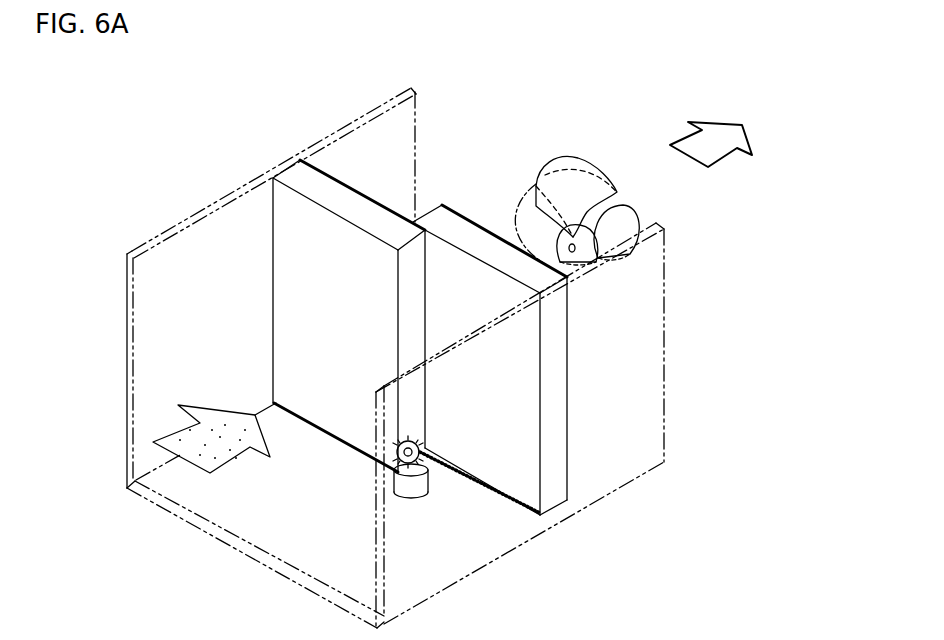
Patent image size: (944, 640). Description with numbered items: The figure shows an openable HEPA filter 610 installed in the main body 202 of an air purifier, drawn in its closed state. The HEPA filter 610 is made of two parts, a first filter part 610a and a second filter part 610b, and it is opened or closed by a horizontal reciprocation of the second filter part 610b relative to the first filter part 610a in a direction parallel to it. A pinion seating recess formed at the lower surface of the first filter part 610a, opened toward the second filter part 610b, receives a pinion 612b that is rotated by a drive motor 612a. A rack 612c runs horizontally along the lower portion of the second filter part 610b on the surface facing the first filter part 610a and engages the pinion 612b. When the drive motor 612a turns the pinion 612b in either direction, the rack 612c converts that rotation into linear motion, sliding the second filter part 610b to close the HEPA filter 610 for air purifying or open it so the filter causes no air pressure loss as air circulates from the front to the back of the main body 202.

The main body 202 is at (178, 218).
The HEPA filter 610 is at (455, 195).
The first filter part 610a is at (297, 178).
The second filter part 610b is at (566, 282).
The drive motor 612a is at (402, 497).
The pinion 612b is at (428, 438).
The rack 612c is at (506, 500).